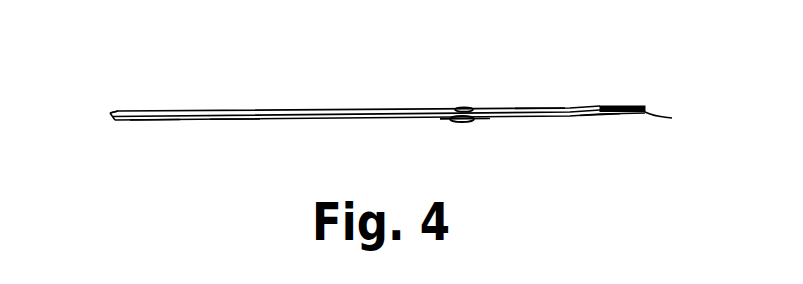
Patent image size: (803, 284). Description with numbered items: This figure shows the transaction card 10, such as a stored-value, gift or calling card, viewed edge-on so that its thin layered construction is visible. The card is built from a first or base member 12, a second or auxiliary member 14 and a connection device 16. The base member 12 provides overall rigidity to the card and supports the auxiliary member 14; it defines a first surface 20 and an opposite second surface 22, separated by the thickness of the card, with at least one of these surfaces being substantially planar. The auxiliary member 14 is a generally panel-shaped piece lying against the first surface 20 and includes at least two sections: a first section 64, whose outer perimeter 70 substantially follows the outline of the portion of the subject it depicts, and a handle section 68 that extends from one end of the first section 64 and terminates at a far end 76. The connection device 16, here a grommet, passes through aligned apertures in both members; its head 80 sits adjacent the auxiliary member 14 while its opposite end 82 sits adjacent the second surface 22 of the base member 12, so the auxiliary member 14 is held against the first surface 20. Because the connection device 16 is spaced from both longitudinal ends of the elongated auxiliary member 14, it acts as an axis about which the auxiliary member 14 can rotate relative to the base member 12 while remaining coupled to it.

The transaction card 10 is at (143, 49).
The base member 12 is at (111, 113).
The auxiliary member 14 is at (152, 122).
The connection device 16 is at (468, 123).
The first surface 20 is at (610, 117).
The second surface 22 is at (537, 108).
The first section 64 is at (233, 122).
The handle section 68 is at (638, 105).
The outer perimeter 70 is at (113, 118).
The far end 76 is at (672, 118).
The head 80 is at (455, 123).
The end 82 is at (465, 107).